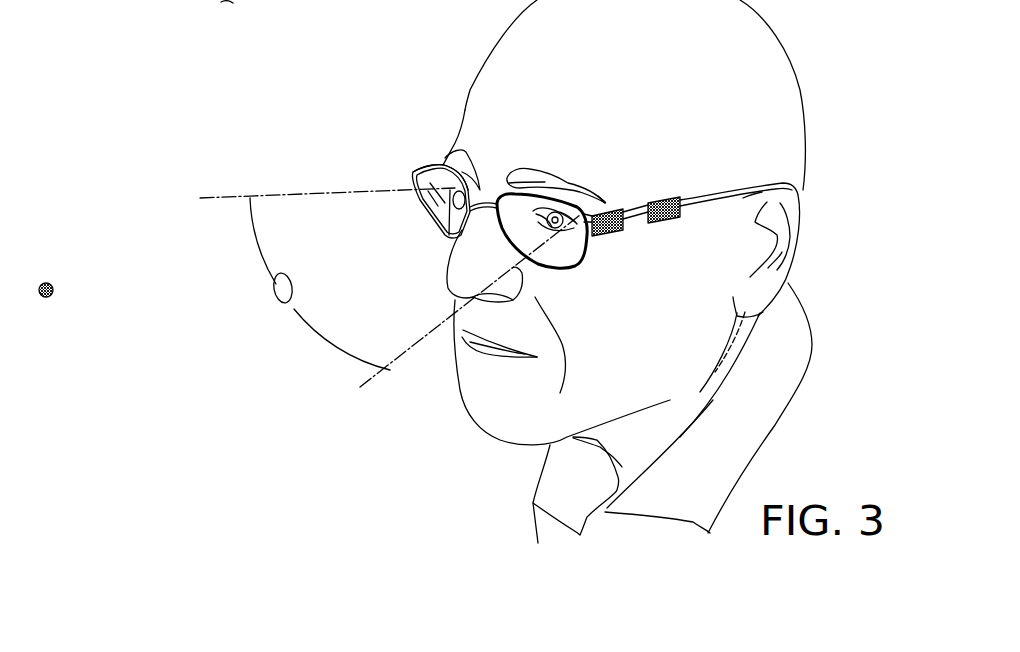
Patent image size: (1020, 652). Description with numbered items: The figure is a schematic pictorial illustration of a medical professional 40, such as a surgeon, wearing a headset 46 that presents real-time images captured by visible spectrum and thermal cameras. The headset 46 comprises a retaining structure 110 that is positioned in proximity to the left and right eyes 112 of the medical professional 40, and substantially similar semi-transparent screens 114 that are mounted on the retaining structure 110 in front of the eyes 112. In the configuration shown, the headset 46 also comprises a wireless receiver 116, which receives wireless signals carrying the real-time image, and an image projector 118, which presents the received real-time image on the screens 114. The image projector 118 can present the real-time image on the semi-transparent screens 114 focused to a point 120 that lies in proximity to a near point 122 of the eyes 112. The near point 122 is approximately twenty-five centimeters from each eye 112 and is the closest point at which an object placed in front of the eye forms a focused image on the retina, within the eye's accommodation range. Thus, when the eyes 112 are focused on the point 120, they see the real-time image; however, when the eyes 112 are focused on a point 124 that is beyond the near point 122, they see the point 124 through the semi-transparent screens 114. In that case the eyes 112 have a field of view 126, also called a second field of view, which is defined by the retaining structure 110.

The medical professional 40 is at (763, 48).
The headset 46 is at (482, 168).
The retaining structure 110 is at (716, 195).
The eyes 112 is at (495, 255).
The semi-transparent screens 114 is at (418, 168).
The wireless receiver 116 is at (658, 223).
The image projector 118 is at (607, 231).
The point 120 is at (273, 290).
The near point 122 is at (294, 366).
The point 124 is at (52, 294).
The field of view 126 is at (287, 196).